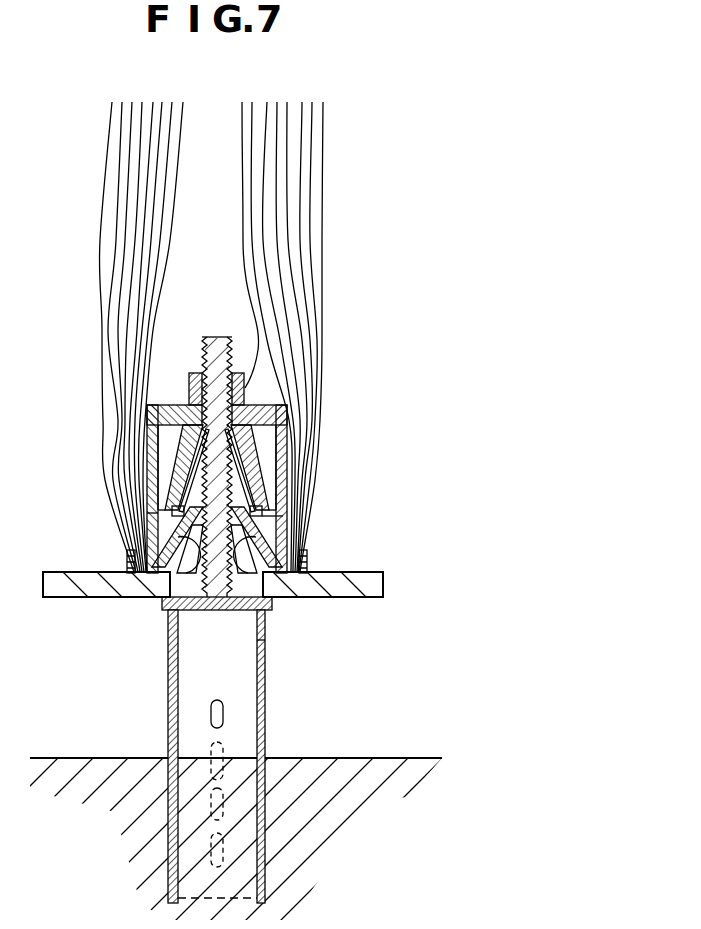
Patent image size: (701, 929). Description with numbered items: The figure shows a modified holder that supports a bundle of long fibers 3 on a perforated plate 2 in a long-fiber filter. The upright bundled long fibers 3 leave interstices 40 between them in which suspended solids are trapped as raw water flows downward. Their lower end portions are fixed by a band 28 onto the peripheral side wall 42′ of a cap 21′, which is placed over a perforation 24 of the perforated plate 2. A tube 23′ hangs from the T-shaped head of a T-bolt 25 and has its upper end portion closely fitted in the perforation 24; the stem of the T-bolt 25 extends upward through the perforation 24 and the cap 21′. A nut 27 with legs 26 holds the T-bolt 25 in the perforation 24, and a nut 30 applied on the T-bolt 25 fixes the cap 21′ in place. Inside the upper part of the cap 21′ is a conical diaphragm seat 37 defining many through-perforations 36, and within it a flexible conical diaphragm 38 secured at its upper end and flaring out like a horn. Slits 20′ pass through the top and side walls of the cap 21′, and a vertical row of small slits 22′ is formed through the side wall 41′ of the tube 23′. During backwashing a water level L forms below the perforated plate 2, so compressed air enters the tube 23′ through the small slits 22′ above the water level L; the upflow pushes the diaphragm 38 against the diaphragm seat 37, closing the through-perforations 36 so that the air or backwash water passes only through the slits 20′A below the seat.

The interstices 40 is at (160, 238).
The bundled long fibers 3 is at (323, 322).
The slits 20′ is at (180, 405).
The legs 26 is at (205, 590).
The nut 30 is at (245, 390).
The T-bolt 25 is at (147, 478).
The cap 21′ is at (148, 430).
The through-perforations 36 is at (178, 458).
The conical diaphragm seat 37 is at (255, 478).
The nut 27 is at (270, 514).
The conical diaphragm 38 is at (165, 585).
The side wall 42′ is at (148, 513).
The slits 20′A is at (138, 535).
The perforated plate 2 is at (360, 573).
The band 28 is at (130, 575).
The perforation 24 is at (253, 590).
The tube 23′ is at (245, 677).
The side wall 41′ is at (265, 658).
The small slits 22′ is at (223, 712).
The water level L is at (390, 758).